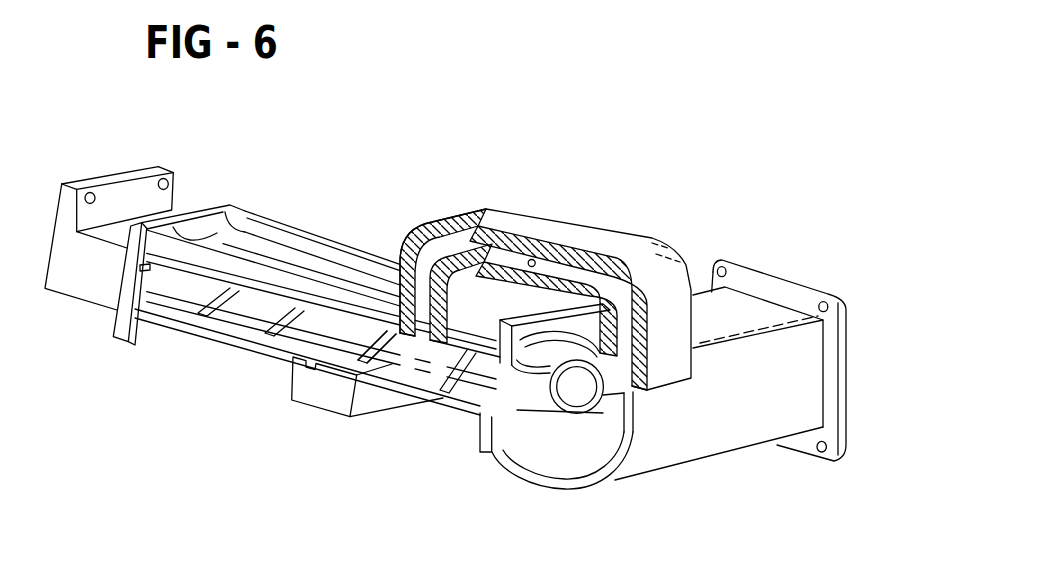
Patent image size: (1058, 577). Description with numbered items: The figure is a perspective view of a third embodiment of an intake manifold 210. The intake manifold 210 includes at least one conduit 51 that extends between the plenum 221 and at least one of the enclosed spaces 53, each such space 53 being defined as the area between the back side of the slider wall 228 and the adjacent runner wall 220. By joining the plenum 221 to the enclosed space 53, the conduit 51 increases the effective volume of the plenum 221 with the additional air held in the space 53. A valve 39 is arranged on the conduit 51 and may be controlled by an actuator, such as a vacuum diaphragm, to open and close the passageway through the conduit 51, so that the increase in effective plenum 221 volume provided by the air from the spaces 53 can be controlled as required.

The intake manifold 210 is at (645, 147).
The conduit 51 is at (528, 212).
The valve 39 is at (534, 262).
The slider wall 228 is at (258, 307).
The enclosed space 53 is at (403, 368).
The runner wall 220 is at (594, 413).
The plenum 221 is at (707, 438).